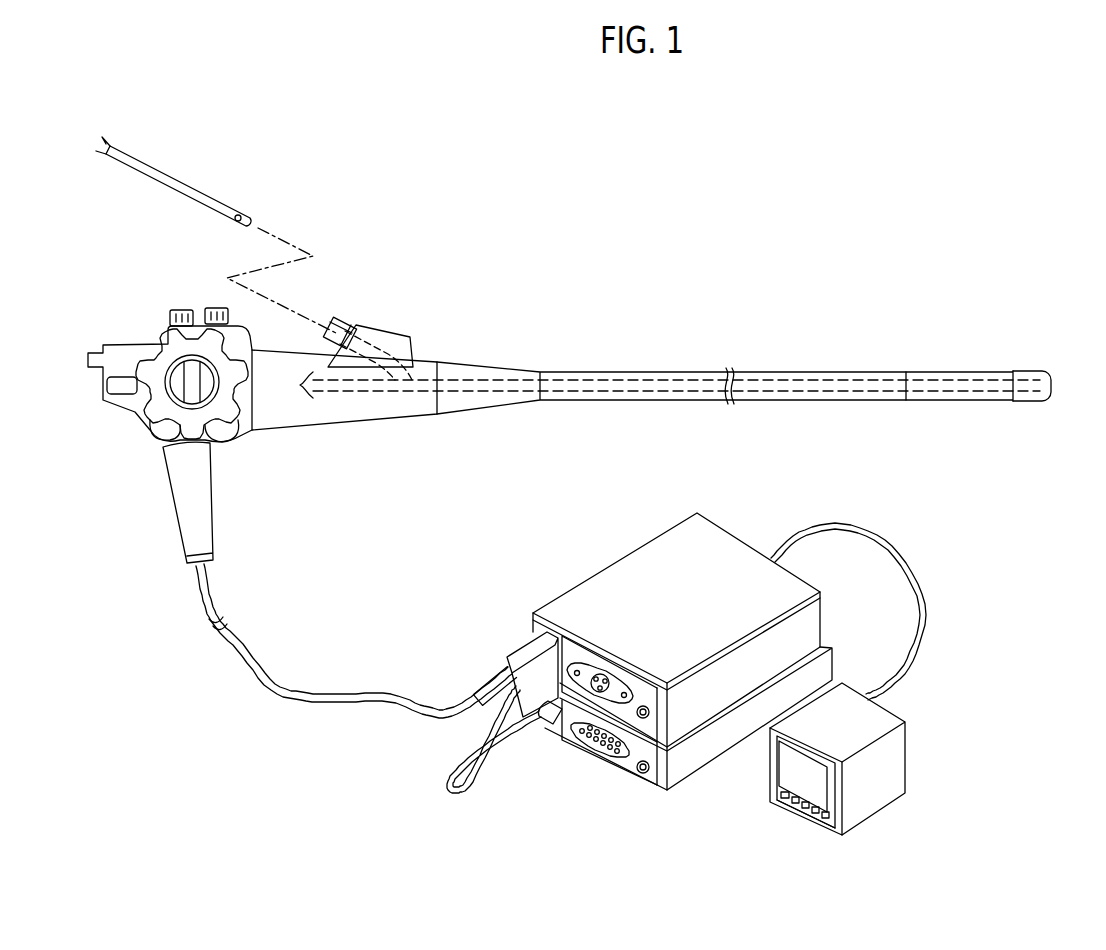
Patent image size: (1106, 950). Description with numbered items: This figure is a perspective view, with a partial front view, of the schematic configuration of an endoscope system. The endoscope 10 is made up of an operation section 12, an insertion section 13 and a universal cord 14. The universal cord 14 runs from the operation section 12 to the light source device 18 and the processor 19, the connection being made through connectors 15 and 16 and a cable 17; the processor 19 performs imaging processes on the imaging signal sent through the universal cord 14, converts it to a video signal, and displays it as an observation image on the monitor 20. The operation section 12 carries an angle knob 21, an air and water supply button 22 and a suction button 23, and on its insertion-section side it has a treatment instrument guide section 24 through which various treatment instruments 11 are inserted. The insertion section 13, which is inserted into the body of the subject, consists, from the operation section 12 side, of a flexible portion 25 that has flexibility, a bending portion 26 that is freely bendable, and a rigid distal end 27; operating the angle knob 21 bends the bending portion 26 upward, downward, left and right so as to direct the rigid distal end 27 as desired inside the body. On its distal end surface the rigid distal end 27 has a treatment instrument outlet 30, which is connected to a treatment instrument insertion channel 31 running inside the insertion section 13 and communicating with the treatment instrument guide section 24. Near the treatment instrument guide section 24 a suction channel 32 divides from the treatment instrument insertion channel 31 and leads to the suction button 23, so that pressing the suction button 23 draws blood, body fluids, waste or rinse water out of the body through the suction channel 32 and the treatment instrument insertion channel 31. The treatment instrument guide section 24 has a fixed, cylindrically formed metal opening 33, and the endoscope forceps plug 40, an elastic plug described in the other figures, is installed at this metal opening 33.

The endoscope 10 is at (585, 392).
The treatment instrument 11 is at (222, 204).
The operation section 12 is at (564, 391).
The insertion section 13 is at (759, 402).
The universal cord 14 is at (268, 680).
The connector 15 is at (525, 650).
The connector 16 is at (538, 722).
The cable 17 is at (450, 772).
The light source device 18 is at (803, 625).
The processor 19 is at (628, 770).
The monitor 20 is at (785, 768).
The angle knob 21 is at (225, 438).
The air and water supply button 22 is at (212, 308).
The suction button 23 is at (178, 312).
The treatment instrument guide section 24 is at (397, 328).
The flexible portion 25 is at (746, 402).
The bending portion 26 is at (918, 400).
The rigid distal end 27 is at (1042, 402).
The treatment instrument outlet 30 is at (1052, 378).
The treatment instrument insertion channel 31 is at (455, 378).
The suction channel 32 is at (355, 390).
The metal opening 33 is at (367, 322).
The endoscope forceps plug 40 is at (338, 322).